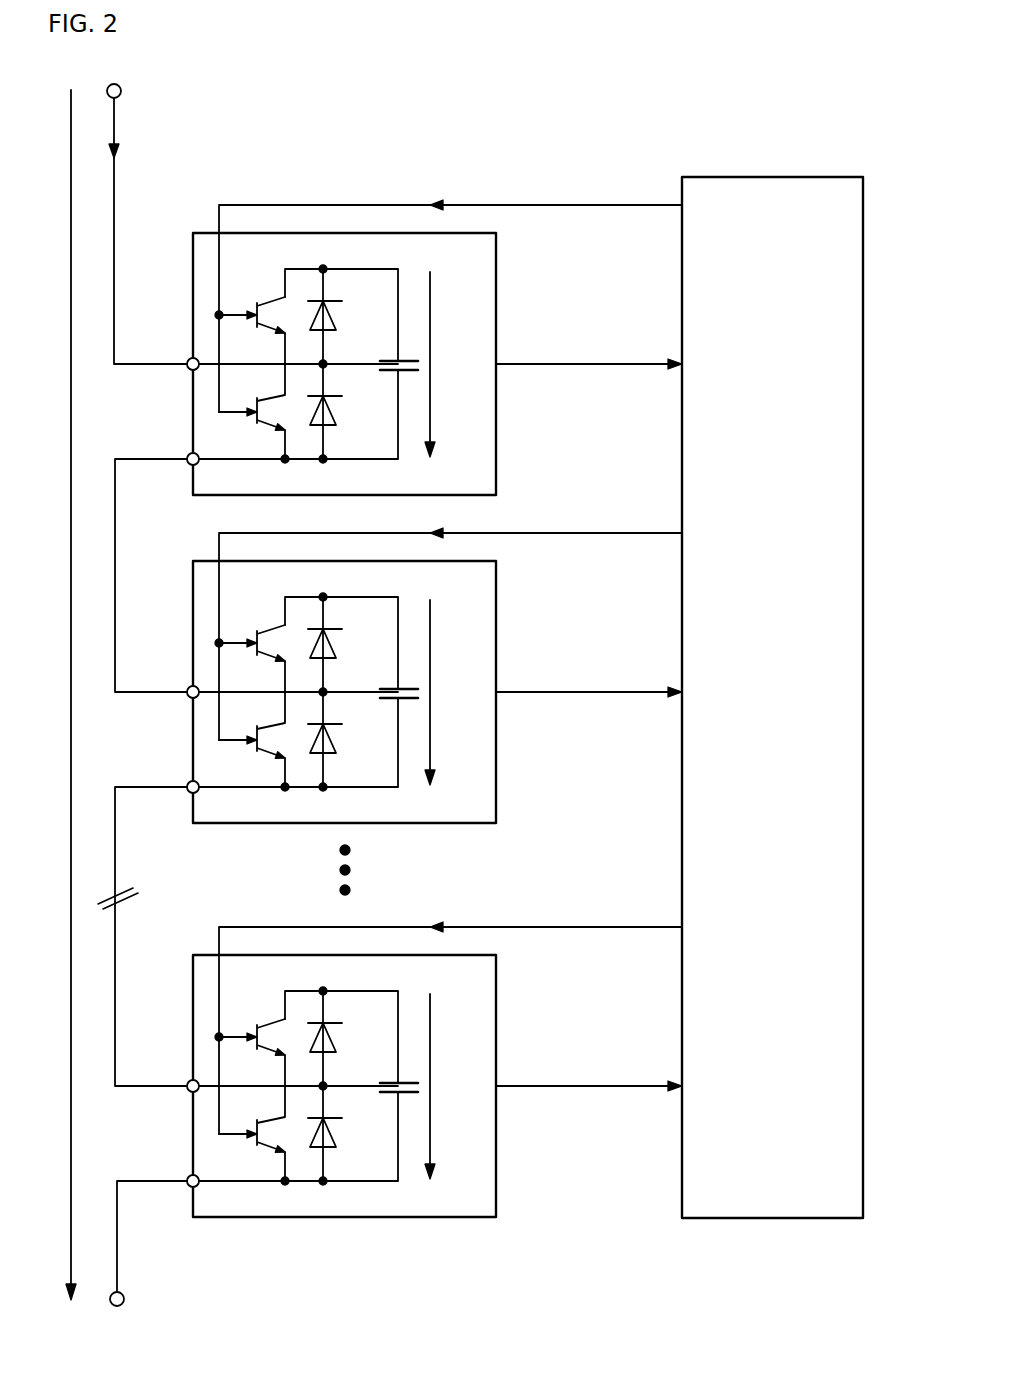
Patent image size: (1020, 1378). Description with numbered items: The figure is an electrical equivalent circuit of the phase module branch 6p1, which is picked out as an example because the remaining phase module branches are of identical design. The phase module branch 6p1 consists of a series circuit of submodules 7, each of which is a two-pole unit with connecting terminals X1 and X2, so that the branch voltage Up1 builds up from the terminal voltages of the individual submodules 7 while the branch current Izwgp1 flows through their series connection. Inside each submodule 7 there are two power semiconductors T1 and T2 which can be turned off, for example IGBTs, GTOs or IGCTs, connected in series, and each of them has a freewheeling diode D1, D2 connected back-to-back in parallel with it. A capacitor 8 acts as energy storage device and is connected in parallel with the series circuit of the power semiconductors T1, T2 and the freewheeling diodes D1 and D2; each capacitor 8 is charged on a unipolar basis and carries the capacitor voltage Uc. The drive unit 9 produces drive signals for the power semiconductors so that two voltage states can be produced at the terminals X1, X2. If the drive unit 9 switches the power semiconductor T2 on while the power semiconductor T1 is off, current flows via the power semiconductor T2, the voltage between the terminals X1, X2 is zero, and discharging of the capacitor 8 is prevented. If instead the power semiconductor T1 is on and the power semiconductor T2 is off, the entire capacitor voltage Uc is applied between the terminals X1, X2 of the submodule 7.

The phase module branch 6p1 is at (571, 126).
The submodule 7 is at (497, 289).
The capacitor 8 is at (378, 360).
The drive unit 9 is at (780, 714).
The power semiconductor which can be turned off T1 is at (257, 308).
The power semiconductor which can be turned off T2 is at (257, 420).
The freewheeling diode D1 is at (338, 316).
The freewheeling diode D2 is at (338, 414).
The connecting terminal X1 is at (172, 712).
The connecting terminal X2 is at (174, 807).
The capacitor voltage Uc is at (431, 326).
The phase module voltage Up1 is at (70, 690).
The intermediate-circuit phase current Izwgp1 is at (118, 152).